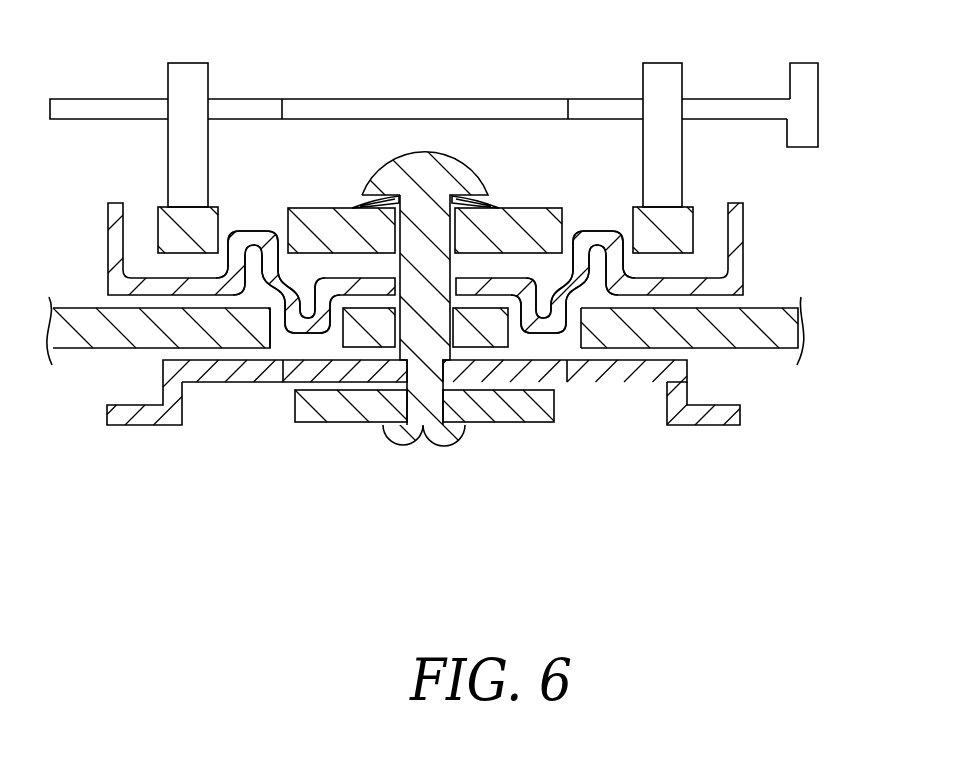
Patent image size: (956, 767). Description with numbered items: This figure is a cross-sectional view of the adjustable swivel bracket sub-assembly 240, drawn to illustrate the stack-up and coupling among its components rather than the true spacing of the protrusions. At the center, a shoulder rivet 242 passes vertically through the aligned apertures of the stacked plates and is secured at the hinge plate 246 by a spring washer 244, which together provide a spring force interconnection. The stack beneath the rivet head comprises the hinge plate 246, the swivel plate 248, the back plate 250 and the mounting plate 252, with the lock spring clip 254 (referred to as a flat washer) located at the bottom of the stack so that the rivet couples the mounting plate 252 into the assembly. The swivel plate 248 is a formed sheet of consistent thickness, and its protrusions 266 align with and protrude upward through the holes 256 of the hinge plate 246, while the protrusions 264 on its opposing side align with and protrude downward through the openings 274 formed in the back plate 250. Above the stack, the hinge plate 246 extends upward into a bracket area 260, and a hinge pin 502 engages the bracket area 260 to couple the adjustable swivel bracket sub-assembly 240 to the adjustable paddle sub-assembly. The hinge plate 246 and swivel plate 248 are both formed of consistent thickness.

The adjustable swivel bracket sub-assembly 240 is at (431, 315).
The shoulder rivet 242 is at (430, 153).
The spring washer 244 is at (482, 204).
The hinge plate 246 is at (326, 207).
The swivel plate 248 is at (108, 263).
The back plate 250 is at (803, 337).
The mounting plate 252 is at (742, 408).
The lock spring clip 254 is at (540, 418).
The holes 256 is at (225, 241).
The bracket area 260 is at (683, 68).
The protrusions 264 is at (313, 323).
The protrusions 266 is at (253, 232).
The openings 274 is at (297, 345).
The hinge pin 502 is at (819, 83).